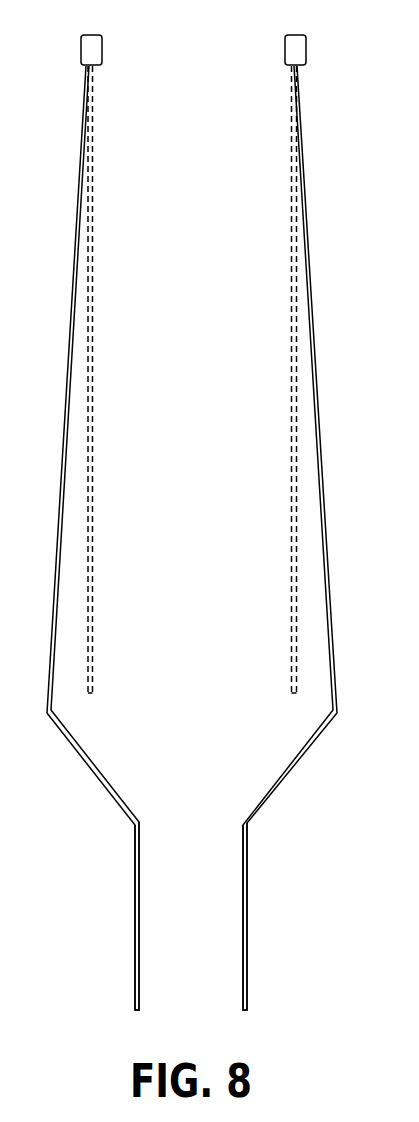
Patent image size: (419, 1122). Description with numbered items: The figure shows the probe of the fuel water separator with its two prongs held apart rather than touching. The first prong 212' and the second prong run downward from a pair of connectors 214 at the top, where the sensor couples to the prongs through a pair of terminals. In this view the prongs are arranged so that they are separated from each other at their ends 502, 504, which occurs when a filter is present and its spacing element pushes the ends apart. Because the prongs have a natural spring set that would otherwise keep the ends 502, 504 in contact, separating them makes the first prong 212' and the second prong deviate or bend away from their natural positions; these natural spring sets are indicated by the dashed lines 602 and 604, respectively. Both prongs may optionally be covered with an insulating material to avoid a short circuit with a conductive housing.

The connector 214 is at (93, 52).
The first prong 212' is at (313, 538).
The line indicating natural spring set of second prong 604 is at (92, 435).
The line indicating natural spring set of first prong 602 is at (292, 511).
The end of second prong 504 is at (138, 932).
The end of first prong 502 is at (243, 932).